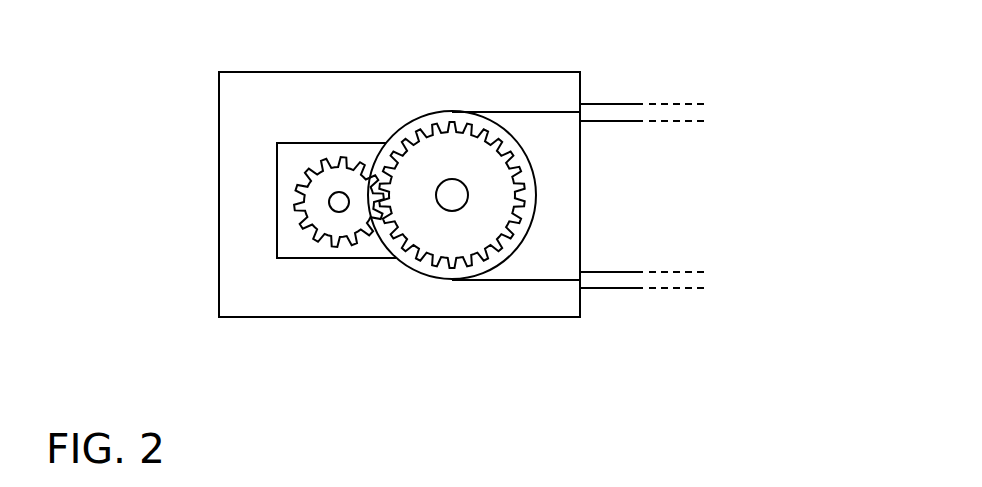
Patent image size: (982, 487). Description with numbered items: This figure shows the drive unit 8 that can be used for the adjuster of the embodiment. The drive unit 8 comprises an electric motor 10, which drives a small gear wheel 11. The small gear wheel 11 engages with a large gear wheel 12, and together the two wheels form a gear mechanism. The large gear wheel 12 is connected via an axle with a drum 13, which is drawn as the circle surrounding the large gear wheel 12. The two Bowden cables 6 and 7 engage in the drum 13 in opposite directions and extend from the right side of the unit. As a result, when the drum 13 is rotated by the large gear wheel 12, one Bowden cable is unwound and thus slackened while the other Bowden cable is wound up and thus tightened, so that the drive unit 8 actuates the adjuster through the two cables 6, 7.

The Bowden cable 6 is at (624, 110).
The Bowden cable 7 is at (623, 280).
The drive unit 8 is at (196, 192).
The electric motor 10 is at (313, 258).
The small gear wheel 11 is at (342, 162).
The large gear wheel 12 is at (437, 262).
The drum 13 is at (399, 132).